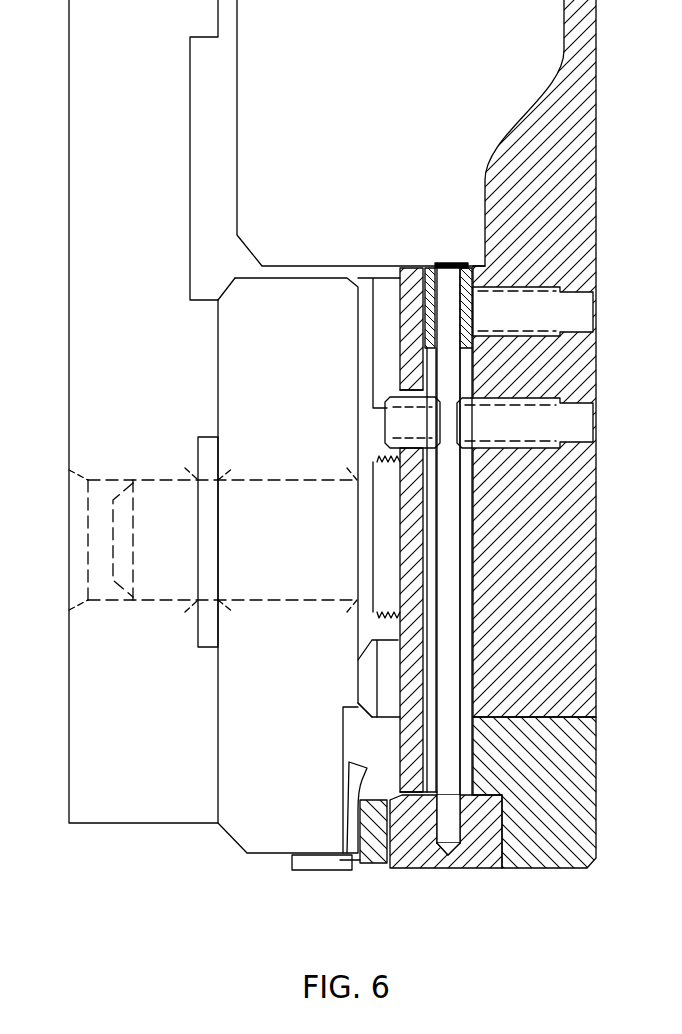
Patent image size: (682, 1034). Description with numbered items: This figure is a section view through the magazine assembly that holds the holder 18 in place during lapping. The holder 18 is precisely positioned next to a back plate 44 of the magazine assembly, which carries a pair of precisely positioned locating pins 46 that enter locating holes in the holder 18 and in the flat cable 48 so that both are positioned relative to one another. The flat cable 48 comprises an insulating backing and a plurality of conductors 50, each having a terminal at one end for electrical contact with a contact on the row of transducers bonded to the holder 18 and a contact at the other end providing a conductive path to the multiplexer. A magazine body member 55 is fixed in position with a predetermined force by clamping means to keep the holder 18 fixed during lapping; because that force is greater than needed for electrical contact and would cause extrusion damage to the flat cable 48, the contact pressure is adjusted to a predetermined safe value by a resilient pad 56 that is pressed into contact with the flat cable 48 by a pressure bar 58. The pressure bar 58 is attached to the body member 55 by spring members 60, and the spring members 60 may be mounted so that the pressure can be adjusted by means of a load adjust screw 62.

The holder 18 is at (318, 671).
The back plate 44 is at (165, 418).
The locating pins 46 is at (143, 562).
The flat cable 48 is at (352, 790).
The conductors 50 is at (327, 870).
The magazine body member 55 is at (585, 212).
The resilient pad 56 is at (373, 860).
The pressure bar 58 is at (475, 860).
The spring members 60 is at (450, 577).
The load adjust screw 62 is at (545, 435).